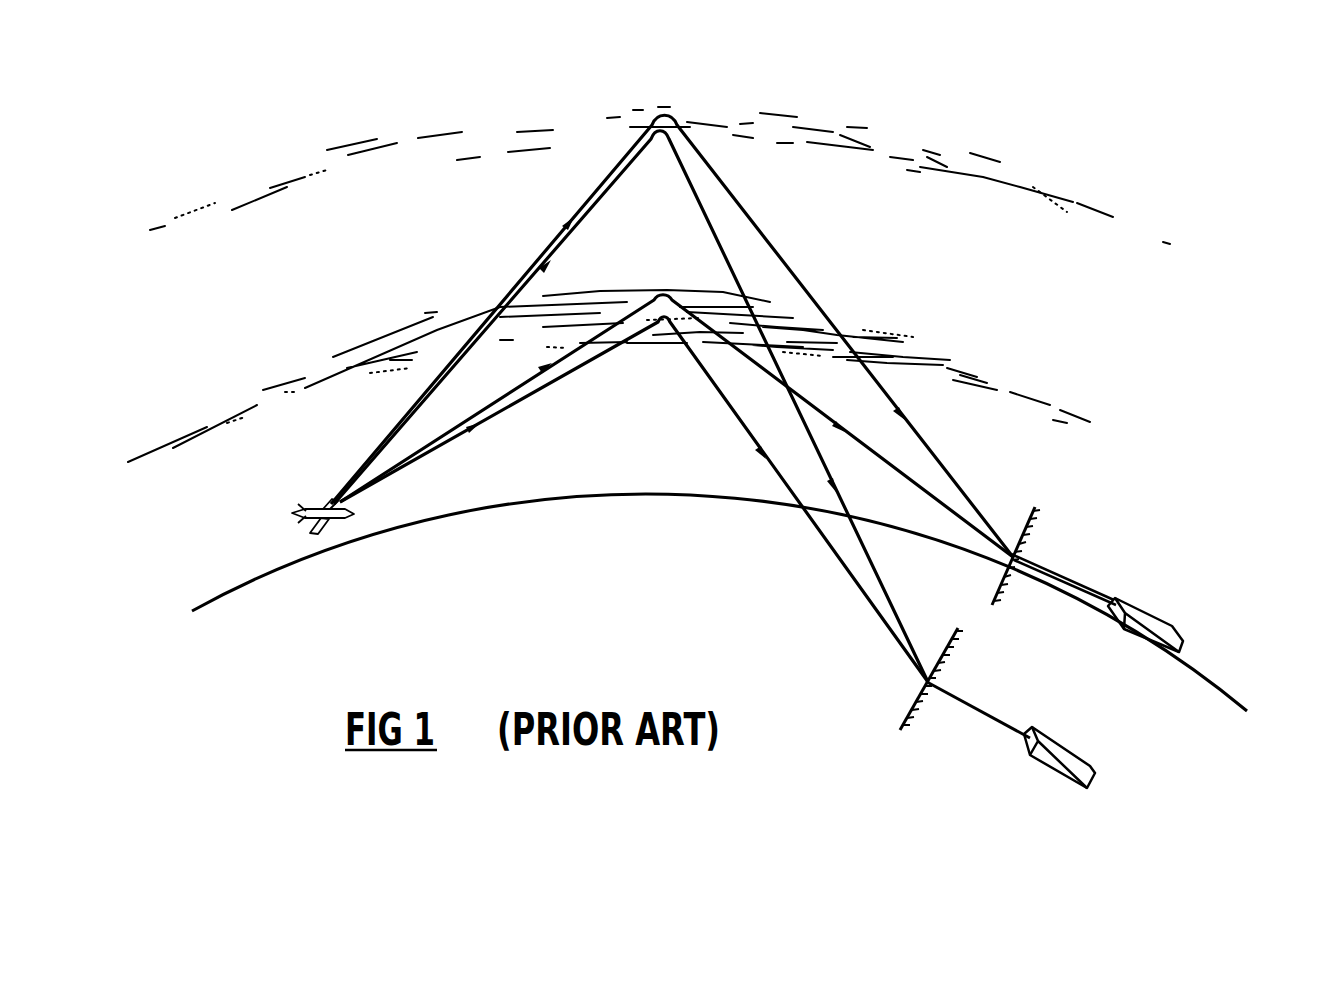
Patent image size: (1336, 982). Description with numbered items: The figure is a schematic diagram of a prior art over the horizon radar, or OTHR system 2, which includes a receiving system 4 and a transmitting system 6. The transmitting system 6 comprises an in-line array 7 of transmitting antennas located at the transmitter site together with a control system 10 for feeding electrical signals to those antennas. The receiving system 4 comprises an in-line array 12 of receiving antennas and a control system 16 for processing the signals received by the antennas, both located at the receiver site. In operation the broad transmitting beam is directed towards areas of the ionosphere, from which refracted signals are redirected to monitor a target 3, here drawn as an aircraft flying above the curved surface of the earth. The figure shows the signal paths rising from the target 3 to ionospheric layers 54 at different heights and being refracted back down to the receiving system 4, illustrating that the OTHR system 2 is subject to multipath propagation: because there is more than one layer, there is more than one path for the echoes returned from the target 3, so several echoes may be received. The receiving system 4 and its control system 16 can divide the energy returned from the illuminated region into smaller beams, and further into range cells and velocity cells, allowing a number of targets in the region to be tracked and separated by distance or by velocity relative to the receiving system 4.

The OTHR system 2 is at (1090, 655).
The target 3 is at (297, 515).
The receiving system 4 is at (1019, 740).
The transmitting system 6 is at (1114, 544).
The in-line array of transmitting antennas 7 is at (1025, 556).
The control system 10 is at (1130, 577).
The in-line array of receiving antennas 12 is at (931, 694).
The control system 16 is at (1017, 760).
The ionospheric layers 54 is at (795, 130).